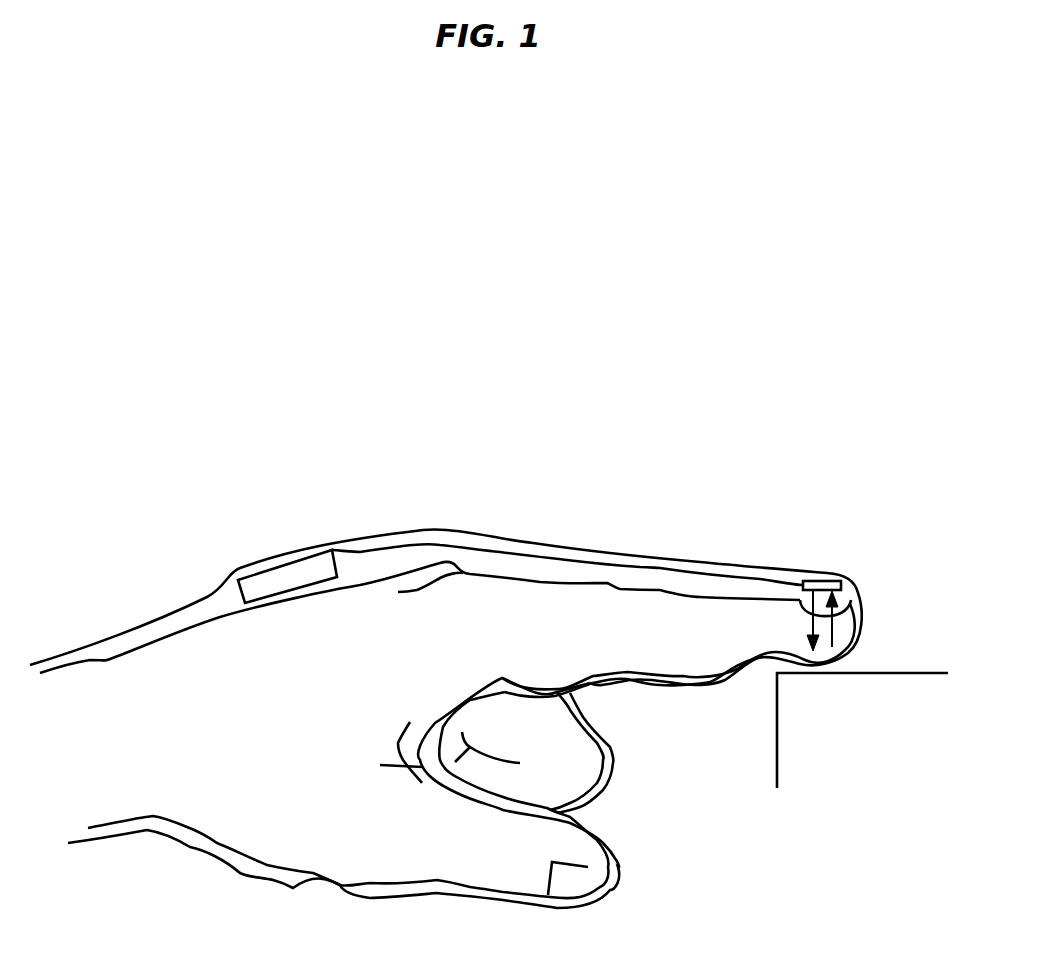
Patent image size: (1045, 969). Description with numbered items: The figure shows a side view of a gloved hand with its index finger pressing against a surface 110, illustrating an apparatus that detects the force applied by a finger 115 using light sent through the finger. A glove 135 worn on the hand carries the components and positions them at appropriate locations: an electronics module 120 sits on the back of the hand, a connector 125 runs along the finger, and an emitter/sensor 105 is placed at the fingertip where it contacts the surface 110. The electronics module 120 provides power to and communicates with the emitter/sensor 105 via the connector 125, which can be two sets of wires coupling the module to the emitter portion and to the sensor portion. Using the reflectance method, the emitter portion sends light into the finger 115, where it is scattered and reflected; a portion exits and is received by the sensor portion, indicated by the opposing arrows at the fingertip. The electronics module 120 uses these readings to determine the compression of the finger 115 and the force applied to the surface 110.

The emitter/sensor 105 is at (822, 573).
The surface 110 is at (845, 673).
The finger 115 is at (628, 682).
The electronics module 120 is at (292, 560).
The connector 125 is at (613, 563).
The glove 135 is at (413, 520).